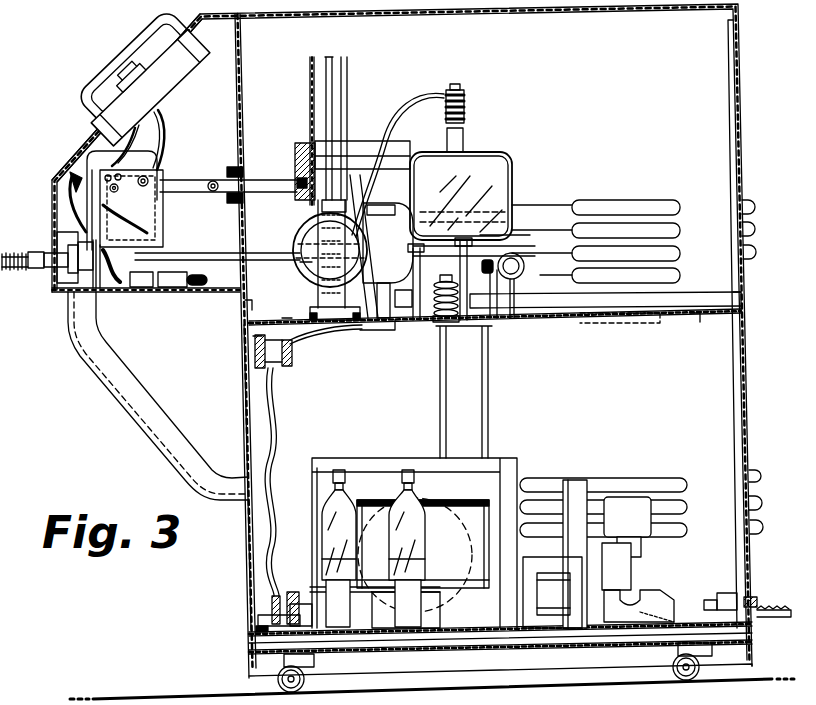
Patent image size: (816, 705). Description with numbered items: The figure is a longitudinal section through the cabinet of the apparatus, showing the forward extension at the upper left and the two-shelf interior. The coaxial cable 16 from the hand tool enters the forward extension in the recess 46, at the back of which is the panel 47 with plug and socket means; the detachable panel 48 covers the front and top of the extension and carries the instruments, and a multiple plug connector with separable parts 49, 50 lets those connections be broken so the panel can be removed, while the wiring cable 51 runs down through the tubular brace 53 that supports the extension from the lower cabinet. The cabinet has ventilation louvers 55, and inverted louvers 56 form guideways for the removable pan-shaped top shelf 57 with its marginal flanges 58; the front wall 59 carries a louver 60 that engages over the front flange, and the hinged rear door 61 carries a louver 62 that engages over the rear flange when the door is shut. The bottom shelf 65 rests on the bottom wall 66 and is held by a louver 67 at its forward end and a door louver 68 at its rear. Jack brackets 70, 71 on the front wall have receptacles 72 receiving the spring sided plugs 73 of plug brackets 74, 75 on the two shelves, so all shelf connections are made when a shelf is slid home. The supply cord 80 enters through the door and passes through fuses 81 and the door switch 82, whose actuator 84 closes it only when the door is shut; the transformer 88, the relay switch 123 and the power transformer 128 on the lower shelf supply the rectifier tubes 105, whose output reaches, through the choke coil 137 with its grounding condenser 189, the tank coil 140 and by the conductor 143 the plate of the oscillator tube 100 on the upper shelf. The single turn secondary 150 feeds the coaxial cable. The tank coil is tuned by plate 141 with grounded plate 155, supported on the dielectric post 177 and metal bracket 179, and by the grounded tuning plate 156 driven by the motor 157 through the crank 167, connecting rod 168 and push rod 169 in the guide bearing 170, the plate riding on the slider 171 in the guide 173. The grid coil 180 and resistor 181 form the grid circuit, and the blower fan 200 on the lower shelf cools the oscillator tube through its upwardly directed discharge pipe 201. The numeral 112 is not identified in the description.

The coaxial cable 16 is at (21, 254).
The recess 46 is at (58, 278).
The panel 47 is at (66, 296).
The panel 48 is at (77, 142).
The connector part 49 is at (142, 287).
The connector part 50 is at (173, 287).
The wiring cable 51 is at (200, 288).
The tubular brace 53 is at (116, 402).
The louvers 55 is at (584, 207).
The louvers 56 is at (648, 320).
The top shelf 57 is at (694, 316).
The marginal flanges 58 is at (246, 318).
The front wall 59 is at (244, 393).
The louver 60 is at (246, 303).
The hinged door 61 is at (741, 155).
The louver 62 is at (741, 288).
The bottom shelf 65 is at (632, 628).
The bottom wall 66 is at (556, 650).
The louver 67 is at (255, 631).
The louver 68 is at (755, 627).
The jack bracket 70 is at (252, 338).
The jack bracket 71 is at (258, 622).
The receptacles 72 is at (284, 326).
The plugs 73 is at (279, 382).
The plug bracket 74 is at (293, 370).
The plug bracket 75 is at (297, 592).
The electrical supply cord 80 is at (787, 632).
The fuses 81 is at (659, 610).
The door switch 82 is at (724, 596).
The actuator 84 is at (754, 604).
The transformer 88 is at (545, 573).
The oscillator tube 100 is at (512, 160).
The rectifier tubes 105 is at (400, 495).
The head handle 112 is at (182, 70).
The relay switch 123 is at (635, 551).
The power transformer 128 is at (510, 467).
The choke coil 137 is at (372, 215).
The tank coil 140 is at (305, 237).
The condenser plate 141 is at (331, 73).
The conductor 143 is at (420, 92).
The single turn secondary 150 is at (305, 260).
The grounded plate 155 is at (347, 83).
The tuning plate 156 is at (309, 112).
The motor 157 is at (95, 163).
The crank 167 is at (131, 191).
The connecting rod 168 is at (180, 179).
The push rod 169 is at (222, 195).
The guide bearing 170 is at (232, 168).
The slider 171 is at (397, 150).
The guide 173 is at (296, 152).
The dielectric post 177 is at (342, 305).
The metal bracket 179 is at (362, 332).
The grid coil 180 is at (524, 271).
The resistor 181 is at (489, 340).
The condenser 189 is at (380, 342).
The blower fan 200 is at (430, 613).
The discharge pipe 201 is at (488, 396).